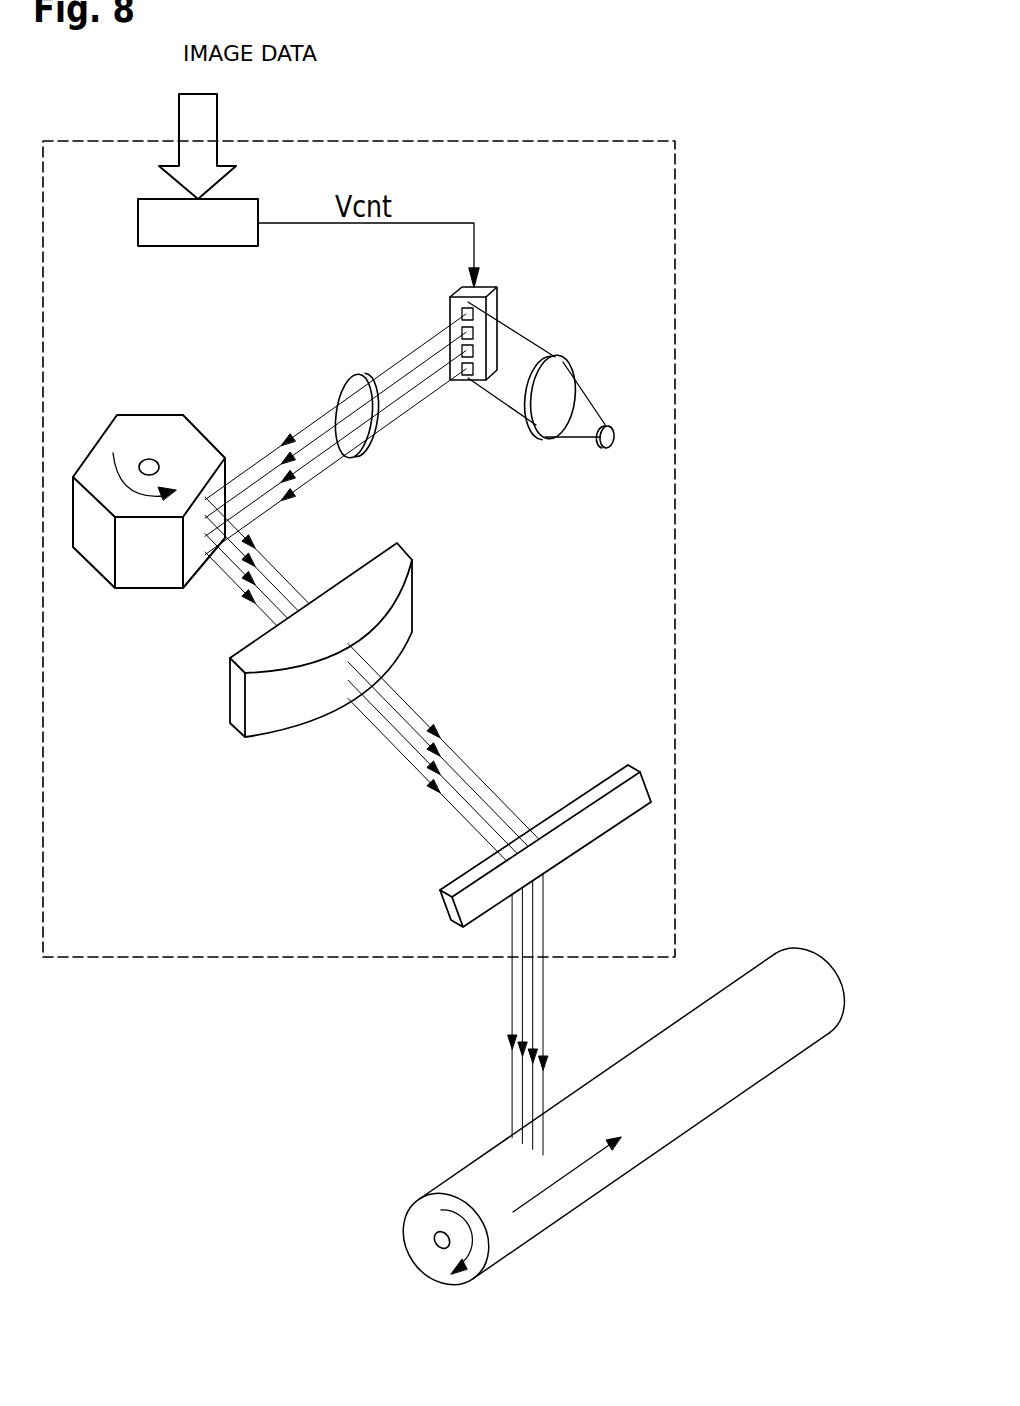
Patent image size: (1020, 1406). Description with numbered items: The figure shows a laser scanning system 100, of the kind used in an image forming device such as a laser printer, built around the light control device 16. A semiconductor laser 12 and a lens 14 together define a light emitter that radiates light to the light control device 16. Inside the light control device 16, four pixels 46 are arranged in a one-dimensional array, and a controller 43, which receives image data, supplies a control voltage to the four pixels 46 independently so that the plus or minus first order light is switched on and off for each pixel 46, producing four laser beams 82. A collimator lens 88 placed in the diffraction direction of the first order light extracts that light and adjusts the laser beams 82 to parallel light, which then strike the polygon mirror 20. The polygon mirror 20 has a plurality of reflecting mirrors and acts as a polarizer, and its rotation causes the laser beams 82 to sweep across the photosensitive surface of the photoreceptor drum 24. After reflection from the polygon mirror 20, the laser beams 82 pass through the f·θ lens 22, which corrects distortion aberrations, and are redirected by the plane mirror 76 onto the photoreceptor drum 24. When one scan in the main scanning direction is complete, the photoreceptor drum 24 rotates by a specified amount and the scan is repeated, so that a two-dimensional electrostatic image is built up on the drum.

The laser scanning system 100 is at (605, 141).
The controller 43 is at (200, 246).
The light control device 16 is at (450, 296).
The pixel 46 is at (450, 310).
The laser beams 82 is at (388, 367).
The collimator lens 88 is at (363, 458).
The lens 14 is at (548, 443).
The semiconductor laser 12 is at (603, 450).
The polygon mirror 20 is at (150, 580).
The f·θ lens 22 is at (240, 713).
The plane mirror 76 is at (602, 775).
The photoreceptor drum 24 is at (410, 1227).